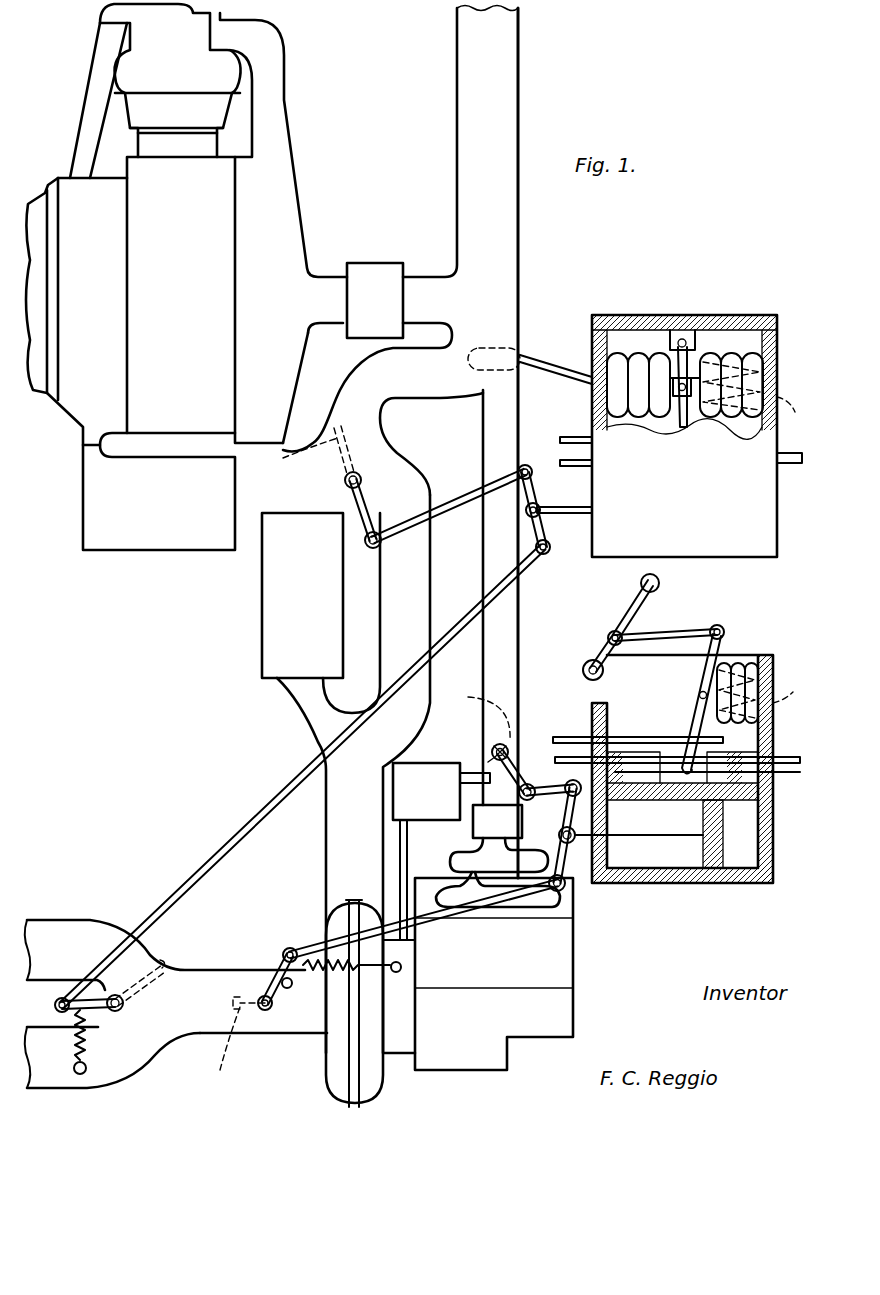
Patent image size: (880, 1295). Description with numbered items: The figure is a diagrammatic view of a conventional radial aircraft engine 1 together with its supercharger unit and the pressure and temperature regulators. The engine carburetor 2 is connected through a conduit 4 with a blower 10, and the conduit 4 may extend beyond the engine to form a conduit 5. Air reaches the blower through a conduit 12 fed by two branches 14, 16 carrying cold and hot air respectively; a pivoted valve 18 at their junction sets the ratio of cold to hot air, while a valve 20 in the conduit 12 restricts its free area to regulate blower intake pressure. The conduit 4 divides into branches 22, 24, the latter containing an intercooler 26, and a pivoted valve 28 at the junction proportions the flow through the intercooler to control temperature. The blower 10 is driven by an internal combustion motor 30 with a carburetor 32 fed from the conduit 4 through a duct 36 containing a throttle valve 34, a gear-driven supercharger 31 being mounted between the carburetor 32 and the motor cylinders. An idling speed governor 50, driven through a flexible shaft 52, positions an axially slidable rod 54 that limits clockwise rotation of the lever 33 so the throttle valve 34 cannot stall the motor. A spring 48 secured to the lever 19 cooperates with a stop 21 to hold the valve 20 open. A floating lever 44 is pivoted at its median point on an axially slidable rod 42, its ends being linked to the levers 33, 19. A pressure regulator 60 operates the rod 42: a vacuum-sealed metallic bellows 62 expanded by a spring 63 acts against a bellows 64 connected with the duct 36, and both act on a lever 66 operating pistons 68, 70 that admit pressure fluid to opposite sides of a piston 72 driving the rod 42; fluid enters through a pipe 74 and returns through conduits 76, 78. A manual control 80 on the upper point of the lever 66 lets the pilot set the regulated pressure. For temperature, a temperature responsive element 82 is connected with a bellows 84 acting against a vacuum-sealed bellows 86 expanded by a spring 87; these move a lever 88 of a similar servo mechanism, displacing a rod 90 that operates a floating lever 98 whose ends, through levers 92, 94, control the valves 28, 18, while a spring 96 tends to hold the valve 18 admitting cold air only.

The radial aircraft engine 1 is at (282, 186).
The carburetor 2 is at (378, 280).
The conduit 4 is at (380, 443).
The conduit 5 is at (500, 60).
The blower 10 is at (337, 1083).
The conduit 12 is at (200, 1020).
The branch 14 is at (117, 1070).
The branch 16 is at (77, 927).
The valve 18 is at (167, 958).
The lever 19 is at (275, 967).
The valve 20 is at (240, 1047).
The stop 21 is at (288, 997).
The branch 22 is at (405, 573).
The branch 24 is at (290, 707).
The intercooler 26 is at (262, 618).
The valve 28 is at (283, 459).
The internal combustion motor 30 is at (563, 968).
The supercharger 31 is at (457, 858).
The carburetor 32 is at (478, 828).
The lever 33 is at (506, 755).
The throttle valve 34 is at (474, 721).
The duct 36 is at (495, 652).
The axially slidable rod 42 is at (575, 845).
The floating lever 44 is at (568, 817).
The spring 48 is at (315, 967).
The idling speed governor 50 is at (437, 773).
The flexible shaft 52 is at (400, 838).
The axially slidable rod 54 is at (477, 770).
The pressure regulator 60 is at (728, 656).
The metallic bellows 62 is at (738, 663).
The spring 63 is at (792, 685).
The bellows 64 is at (626, 626).
The lever 66 is at (705, 645).
The piston 68 is at (778, 773).
The piston 70 is at (583, 776).
The piston 72 is at (693, 880).
The pipe 74 is at (575, 727).
The conduit 76 is at (558, 756).
The conduit 78 is at (787, 757).
The manual control 80 is at (659, 581).
The temperature responsive element 82 is at (500, 345).
The bellows 84 is at (637, 355).
The bellows 86 is at (733, 355).
The spring 87 is at (790, 414).
The lever 88 is at (690, 350).
The rod 90 is at (572, 510).
The lever 92 is at (360, 545).
The lever 94 is at (100, 1012).
The spring 96 is at (72, 1055).
The floating lever 98 is at (550, 532).